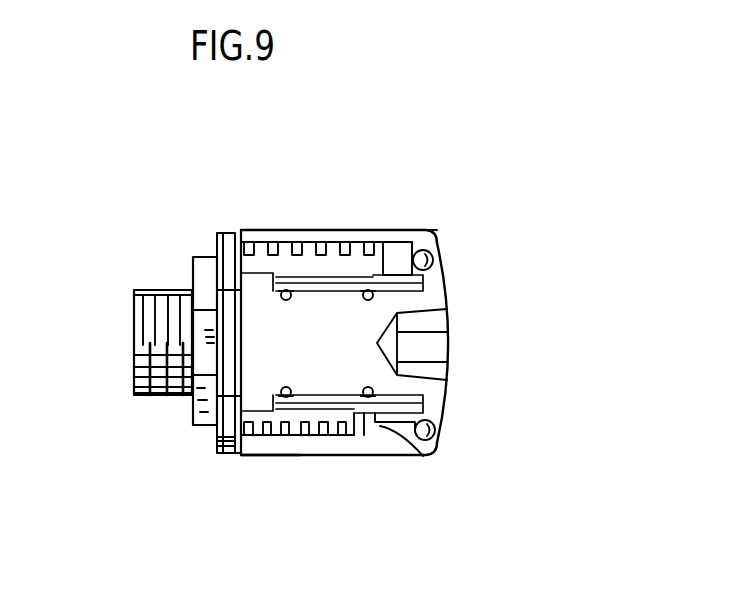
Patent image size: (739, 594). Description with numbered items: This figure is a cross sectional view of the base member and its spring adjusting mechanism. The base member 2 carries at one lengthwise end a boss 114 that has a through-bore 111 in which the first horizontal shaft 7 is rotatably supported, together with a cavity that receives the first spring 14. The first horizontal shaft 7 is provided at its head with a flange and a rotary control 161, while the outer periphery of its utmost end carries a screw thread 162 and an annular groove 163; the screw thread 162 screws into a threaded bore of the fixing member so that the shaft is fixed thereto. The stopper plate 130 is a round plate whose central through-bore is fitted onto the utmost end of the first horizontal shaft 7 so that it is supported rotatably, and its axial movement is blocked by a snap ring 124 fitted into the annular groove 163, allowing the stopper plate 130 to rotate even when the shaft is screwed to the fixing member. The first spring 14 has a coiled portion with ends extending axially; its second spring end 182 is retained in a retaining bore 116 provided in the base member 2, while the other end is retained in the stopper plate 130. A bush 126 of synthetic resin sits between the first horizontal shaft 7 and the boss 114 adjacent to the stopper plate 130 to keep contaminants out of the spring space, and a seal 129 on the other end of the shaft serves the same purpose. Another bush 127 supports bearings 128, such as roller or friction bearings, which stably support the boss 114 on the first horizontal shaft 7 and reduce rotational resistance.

The base member 2 is at (298, 470).
The first horizontal shaft 7 is at (441, 398).
The first spring 14 is at (309, 230).
The through-bore 111 is at (411, 241).
The boss 114 is at (395, 450).
The retaining bore 116 is at (431, 446).
The snap ring 124 is at (209, 258).
The bush 126 is at (240, 230).
The bush 127 is at (395, 260).
The bearings 128 is at (288, 386).
The seal 129 is at (433, 257).
The stopper plate 130 is at (224, 456).
The rotary control 161 is at (438, 326).
The screw thread 162 is at (162, 288).
The annular groove 163 is at (190, 318).
The second spring end 182 is at (366, 447).